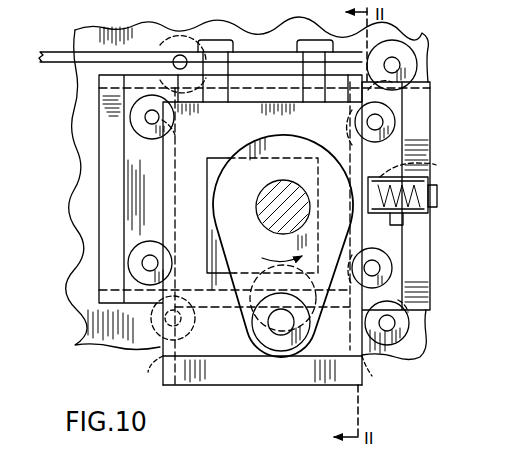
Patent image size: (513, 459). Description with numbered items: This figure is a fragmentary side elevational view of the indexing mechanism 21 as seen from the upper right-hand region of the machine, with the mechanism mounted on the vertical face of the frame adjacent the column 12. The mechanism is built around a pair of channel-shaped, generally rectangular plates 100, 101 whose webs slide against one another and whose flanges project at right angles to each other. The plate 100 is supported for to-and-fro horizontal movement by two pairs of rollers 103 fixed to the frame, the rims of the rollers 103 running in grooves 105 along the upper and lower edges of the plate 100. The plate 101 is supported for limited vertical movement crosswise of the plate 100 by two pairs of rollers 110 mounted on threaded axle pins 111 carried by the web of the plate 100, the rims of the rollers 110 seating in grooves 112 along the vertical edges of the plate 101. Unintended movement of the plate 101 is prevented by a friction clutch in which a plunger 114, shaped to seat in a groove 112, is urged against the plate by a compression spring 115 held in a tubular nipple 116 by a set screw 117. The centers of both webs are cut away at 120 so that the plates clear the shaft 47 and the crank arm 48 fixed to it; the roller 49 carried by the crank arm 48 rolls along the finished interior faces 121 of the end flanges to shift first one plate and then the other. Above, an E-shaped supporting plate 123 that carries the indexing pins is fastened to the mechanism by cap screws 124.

The column 12 is at (75, 196).
The indexing mechanism 21 is at (428, 355).
The shaft 47 is at (258, 212).
The crank arm 48 is at (260, 301).
The roller 49 is at (302, 358).
The plate 100 is at (432, 282).
The plate 101 is at (218, 386).
The rollers 103 is at (180, 55).
The grooves 105 is at (410, 90).
The rollers 110 is at (130, 120).
The threaded axle pins 111 is at (384, 122).
The grooves 112 is at (152, 372).
The plunger 114 is at (436, 162).
The compression spring 115 is at (430, 180).
The tubular nipple 116 is at (405, 223).
The set screw 117 is at (438, 200).
The cut-away portion 120 is at (222, 160).
The interior faces 121 is at (250, 102).
The E-shaped supporting plate 123 is at (62, 52).
The cap screws 124 is at (215, 42).